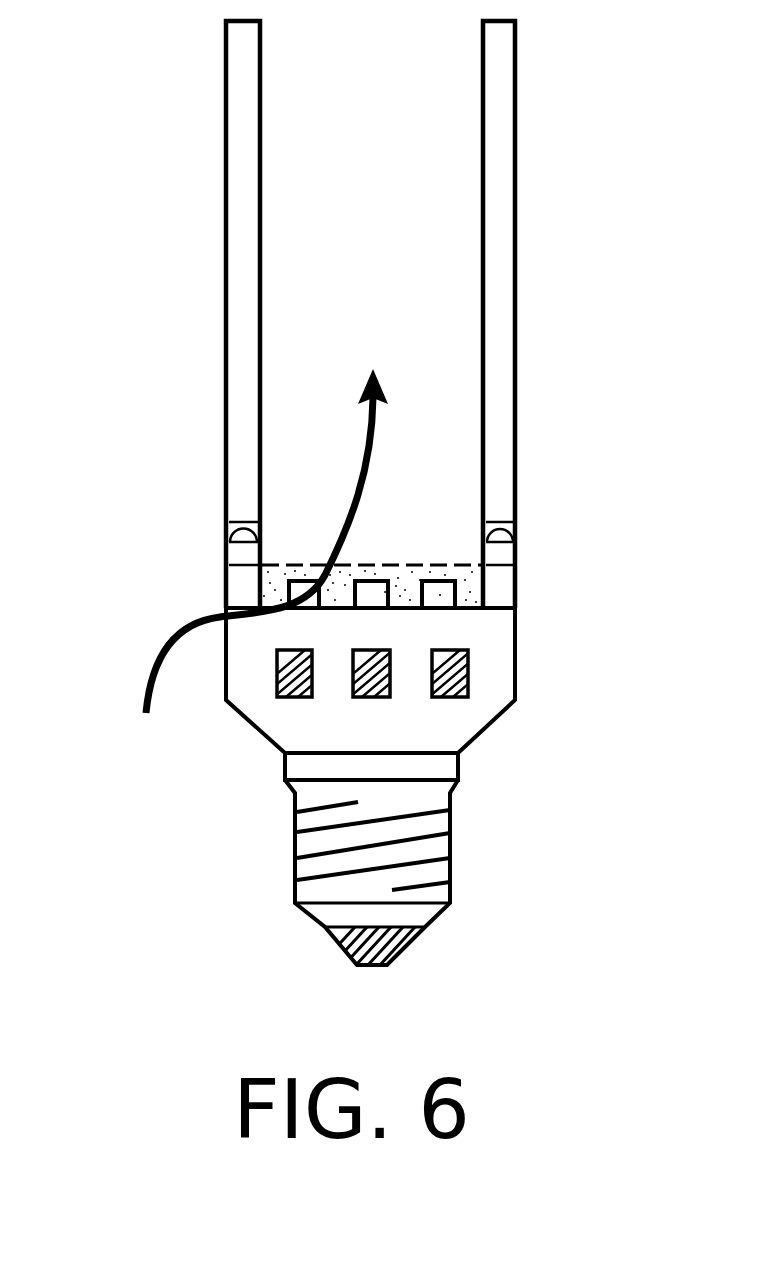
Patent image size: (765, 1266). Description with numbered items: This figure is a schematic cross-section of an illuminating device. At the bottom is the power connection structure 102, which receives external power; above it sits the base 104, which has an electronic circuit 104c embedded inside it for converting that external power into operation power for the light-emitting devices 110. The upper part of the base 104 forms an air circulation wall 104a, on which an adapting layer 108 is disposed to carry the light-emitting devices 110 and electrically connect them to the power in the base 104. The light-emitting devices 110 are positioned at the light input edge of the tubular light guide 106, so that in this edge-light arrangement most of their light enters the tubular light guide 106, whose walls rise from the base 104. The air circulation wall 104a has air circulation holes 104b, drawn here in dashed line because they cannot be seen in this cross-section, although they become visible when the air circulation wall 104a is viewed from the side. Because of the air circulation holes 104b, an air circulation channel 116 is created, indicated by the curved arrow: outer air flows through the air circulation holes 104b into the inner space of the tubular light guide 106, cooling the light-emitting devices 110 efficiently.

The power connection structure 102 is at (442, 847).
The base 104 is at (503, 648).
The air circulation wall 104a is at (486, 597).
The air circulation hole 104b is at (486, 580).
The electronic circuit 104c is at (453, 682).
The tubular light guide 106 is at (502, 248).
The adapting layer 108 is at (505, 553).
The light-emitting device 110 is at (517, 522).
The air circulation channel 116 is at (146, 680).